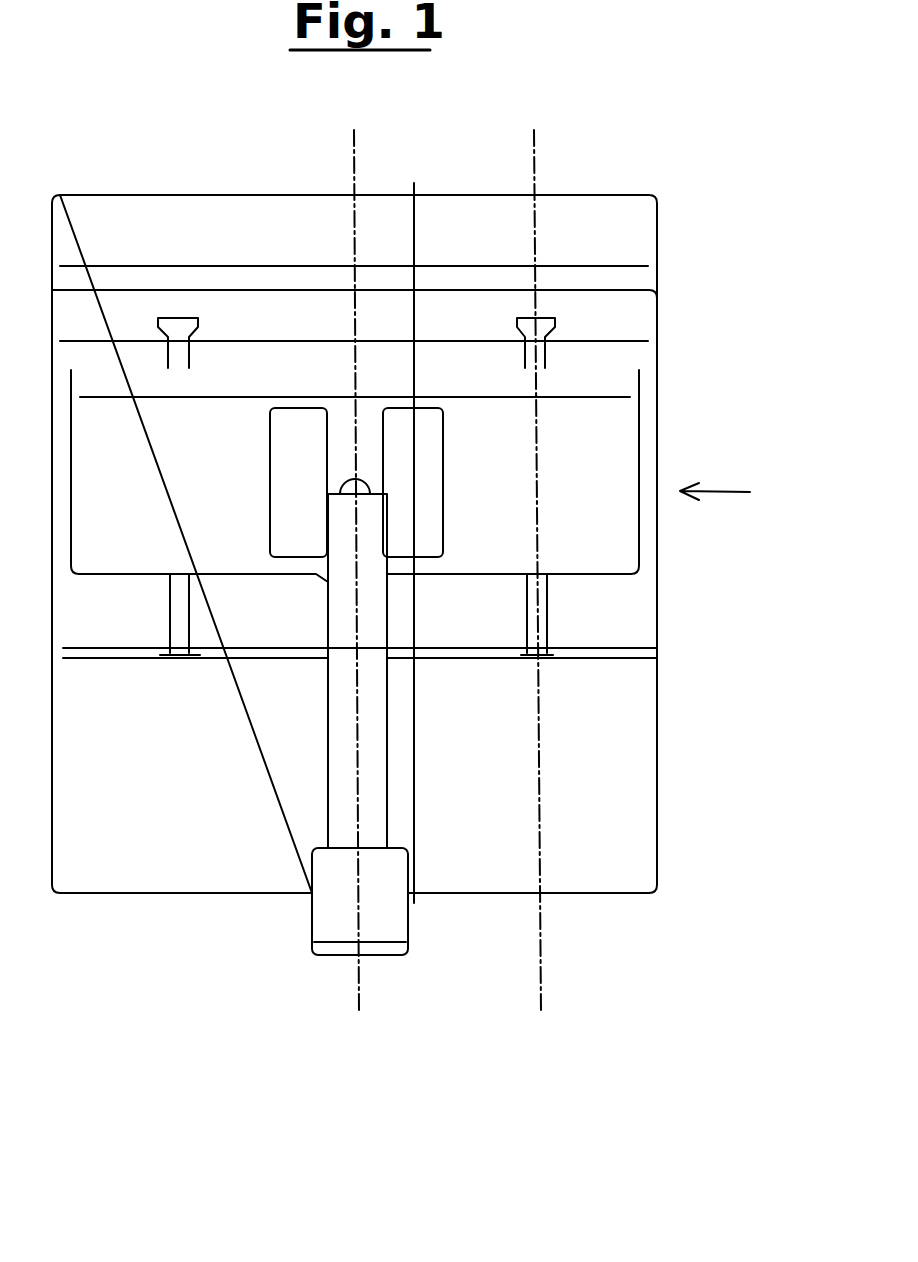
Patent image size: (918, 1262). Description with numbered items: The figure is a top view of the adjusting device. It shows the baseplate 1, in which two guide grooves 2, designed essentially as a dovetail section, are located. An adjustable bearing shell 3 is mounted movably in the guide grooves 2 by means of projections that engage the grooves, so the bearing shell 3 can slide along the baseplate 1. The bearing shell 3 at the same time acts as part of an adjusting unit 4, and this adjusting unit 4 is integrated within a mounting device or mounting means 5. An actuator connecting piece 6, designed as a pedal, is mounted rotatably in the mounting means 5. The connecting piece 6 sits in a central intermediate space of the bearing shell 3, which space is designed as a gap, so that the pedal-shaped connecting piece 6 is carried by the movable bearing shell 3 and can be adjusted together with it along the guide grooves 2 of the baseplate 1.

The baseplate 1 is at (578, 815).
The guide grooves 2 is at (180, 637).
The bearing shell 3 is at (541, 1010).
The adjusting unit 4 is at (359, 1010).
The mounting means 5 is at (726, 495).
The actuator connecting piece 6 is at (343, 812).